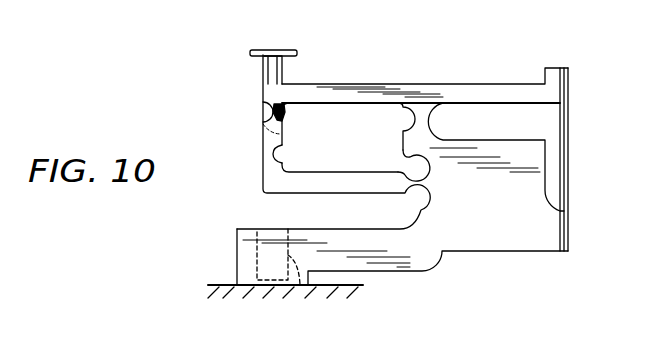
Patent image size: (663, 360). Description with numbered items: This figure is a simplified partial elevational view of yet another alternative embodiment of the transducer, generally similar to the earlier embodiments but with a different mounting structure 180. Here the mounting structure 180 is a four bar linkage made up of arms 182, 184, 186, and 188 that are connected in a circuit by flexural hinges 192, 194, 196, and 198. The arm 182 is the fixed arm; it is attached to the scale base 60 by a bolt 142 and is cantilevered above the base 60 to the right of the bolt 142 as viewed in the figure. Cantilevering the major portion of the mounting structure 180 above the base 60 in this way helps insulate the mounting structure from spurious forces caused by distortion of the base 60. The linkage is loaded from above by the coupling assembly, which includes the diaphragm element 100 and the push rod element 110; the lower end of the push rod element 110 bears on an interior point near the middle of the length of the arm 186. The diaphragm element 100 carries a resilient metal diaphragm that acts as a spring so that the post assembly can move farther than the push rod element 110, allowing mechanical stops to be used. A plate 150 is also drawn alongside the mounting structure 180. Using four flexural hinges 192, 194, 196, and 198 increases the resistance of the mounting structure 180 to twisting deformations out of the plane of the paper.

The scale base 60 is at (222, 285).
The diaphragm element 100 is at (261, 49).
The push rod element 110 is at (263, 76).
The bolt 142 is at (302, 296).
The plate 150 is at (574, 157).
The mounting structure 180 is at (503, 262).
The fixed arm 182 is at (243, 241).
The arm 184 is at (529, 84).
The arm 186 is at (262, 136).
The arm 188 is at (353, 174).
The flexural hinge 192 is at (428, 118).
The flexural hinge 194 is at (285, 109).
The flexural hinge 196 is at (262, 158).
The flexural hinge 198 is at (420, 180).